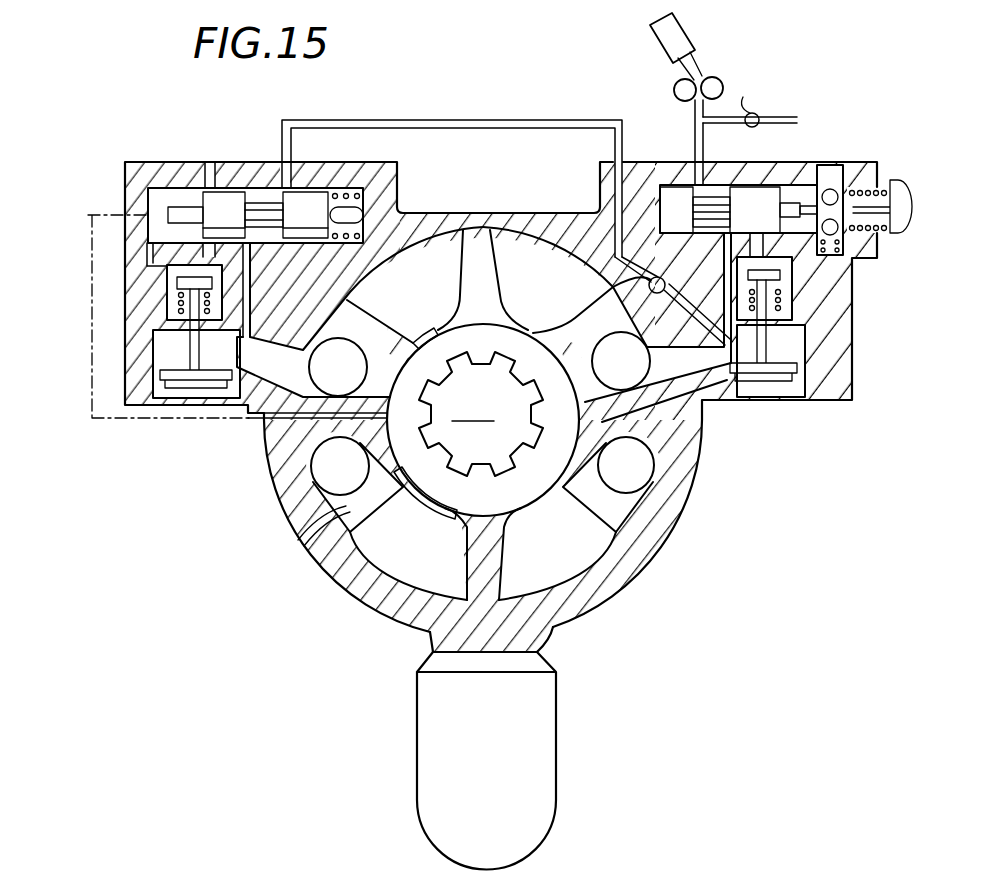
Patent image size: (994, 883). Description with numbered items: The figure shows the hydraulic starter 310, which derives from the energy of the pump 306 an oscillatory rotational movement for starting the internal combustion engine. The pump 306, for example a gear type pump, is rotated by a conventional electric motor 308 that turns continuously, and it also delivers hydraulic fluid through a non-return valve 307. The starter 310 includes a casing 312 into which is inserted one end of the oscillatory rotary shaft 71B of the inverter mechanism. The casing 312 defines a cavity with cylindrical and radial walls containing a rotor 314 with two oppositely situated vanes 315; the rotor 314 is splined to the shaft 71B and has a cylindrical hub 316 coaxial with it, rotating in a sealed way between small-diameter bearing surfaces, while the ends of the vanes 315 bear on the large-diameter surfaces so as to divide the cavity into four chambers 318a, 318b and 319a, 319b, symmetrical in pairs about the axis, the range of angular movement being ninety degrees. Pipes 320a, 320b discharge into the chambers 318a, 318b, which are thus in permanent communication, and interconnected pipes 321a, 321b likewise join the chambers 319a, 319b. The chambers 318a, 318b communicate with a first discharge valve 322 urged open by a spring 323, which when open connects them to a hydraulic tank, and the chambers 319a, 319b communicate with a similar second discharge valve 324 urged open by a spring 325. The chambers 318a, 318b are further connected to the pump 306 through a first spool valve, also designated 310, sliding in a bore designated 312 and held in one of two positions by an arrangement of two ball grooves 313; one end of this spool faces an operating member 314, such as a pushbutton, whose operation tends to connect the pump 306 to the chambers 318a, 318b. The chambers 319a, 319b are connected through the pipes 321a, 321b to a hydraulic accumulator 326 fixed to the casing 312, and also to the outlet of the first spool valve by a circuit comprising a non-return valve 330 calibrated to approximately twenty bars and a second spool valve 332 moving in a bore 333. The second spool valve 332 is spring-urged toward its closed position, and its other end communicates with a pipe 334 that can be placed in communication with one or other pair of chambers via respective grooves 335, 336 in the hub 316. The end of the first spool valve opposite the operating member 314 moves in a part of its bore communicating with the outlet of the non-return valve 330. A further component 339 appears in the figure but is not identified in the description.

The pump 306 is at (717, 80).
The non-return valve 307 is at (750, 98).
The electric motor 308 is at (650, 38).
The hydraulic starter 310 is at (787, 188).
The casing 312 is at (645, 194).
The ball grooves 313 is at (833, 177).
The rotor 314 is at (537, 327).
The vanes 315 is at (473, 265).
The cylindrical hub 316 is at (525, 467).
The chamber 318a is at (527, 243).
The chamber 318b is at (357, 583).
The chamber 319a is at (437, 243).
The chamber 319b is at (600, 548).
The pipe 320a is at (590, 330).
The pipe 320b is at (307, 533).
The pipe 321a is at (373, 340).
The pipe 321b is at (620, 500).
The first discharge valve 322 is at (777, 377).
The spring 323 is at (780, 300).
The second discharge valve 324 is at (172, 403).
The spring 325 is at (178, 310).
The hydraulic accumulator 326 is at (543, 733).
The non-return valve 330 is at (598, 262).
The second spool valve 332 is at (310, 197).
The bore 333 is at (162, 188).
The pipe 334 is at (253, 417).
The groove 335 is at (440, 497).
The groove 336 is at (430, 338).
The return spring 339 is at (347, 190).
The oscillatory rotary shaft 71B is at (473, 410).